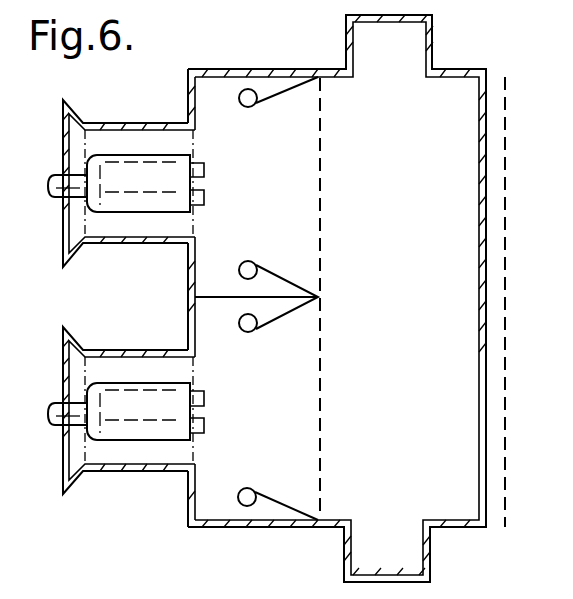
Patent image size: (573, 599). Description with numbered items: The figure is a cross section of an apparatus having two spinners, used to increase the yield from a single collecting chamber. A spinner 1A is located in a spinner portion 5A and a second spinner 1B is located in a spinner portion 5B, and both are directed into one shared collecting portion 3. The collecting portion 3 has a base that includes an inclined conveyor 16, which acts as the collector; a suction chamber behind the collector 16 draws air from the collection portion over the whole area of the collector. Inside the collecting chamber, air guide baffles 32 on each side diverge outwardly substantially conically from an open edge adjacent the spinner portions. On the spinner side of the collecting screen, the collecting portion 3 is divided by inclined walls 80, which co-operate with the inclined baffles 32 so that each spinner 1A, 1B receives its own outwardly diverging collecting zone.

The collecting portion 3 is at (233, 130).
The inclined conveyor 16 is at (321, 180).
The air guide baffles 32 is at (280, 96).
The inclined walls 80 is at (282, 264).
The spinner portion 5A is at (143, 162).
The spinner 1A is at (140, 205).
The spinner portion 5B is at (128, 475).
The spinner 1B is at (145, 390).